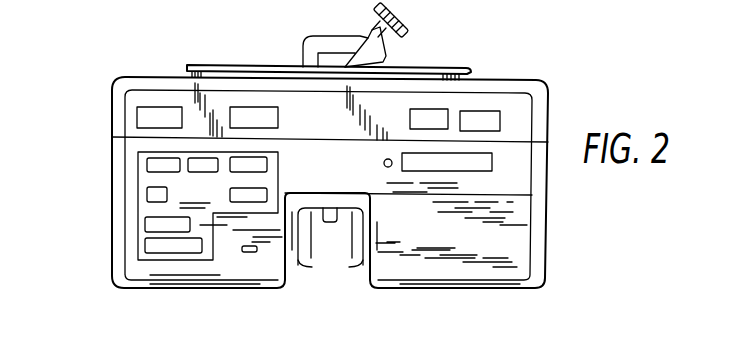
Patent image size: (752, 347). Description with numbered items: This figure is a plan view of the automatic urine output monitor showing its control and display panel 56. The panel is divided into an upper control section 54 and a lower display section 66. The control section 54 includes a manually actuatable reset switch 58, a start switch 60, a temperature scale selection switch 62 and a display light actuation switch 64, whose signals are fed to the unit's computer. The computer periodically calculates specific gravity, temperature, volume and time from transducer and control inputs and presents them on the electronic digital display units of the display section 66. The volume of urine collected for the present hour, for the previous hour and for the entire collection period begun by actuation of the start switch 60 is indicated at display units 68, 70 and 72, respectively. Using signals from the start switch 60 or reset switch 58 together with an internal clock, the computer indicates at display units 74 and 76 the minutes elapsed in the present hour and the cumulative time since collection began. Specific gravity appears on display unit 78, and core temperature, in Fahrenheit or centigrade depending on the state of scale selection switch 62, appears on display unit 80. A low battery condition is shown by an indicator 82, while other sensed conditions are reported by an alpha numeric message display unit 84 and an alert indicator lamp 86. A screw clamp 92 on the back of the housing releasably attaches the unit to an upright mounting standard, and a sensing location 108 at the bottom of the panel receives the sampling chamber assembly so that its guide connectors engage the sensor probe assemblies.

The control section 54 is at (351, 129).
The control and display panel 56 is at (108, 130).
The reset switch 58 is at (163, 112).
The start switch 60 is at (260, 110).
The temperature scale selection switch 62 is at (423, 110).
The display light actuation switch 64 is at (487, 112).
The display section 66 is at (347, 175).
The display unit 68 is at (150, 163).
The display unit 70 is at (197, 160).
The display unit 72 is at (243, 170).
The display unit 74 is at (148, 195).
The display unit 76 is at (232, 197).
The display unit 78 is at (147, 223).
The display unit 80 is at (147, 246).
The indicator 82 is at (249, 253).
The alpha numeric message display unit 84 is at (476, 171).
The alert indicator lamp 86 is at (390, 167).
The screw clamp 92 is at (335, 42).
The sensing location 108 is at (335, 253).